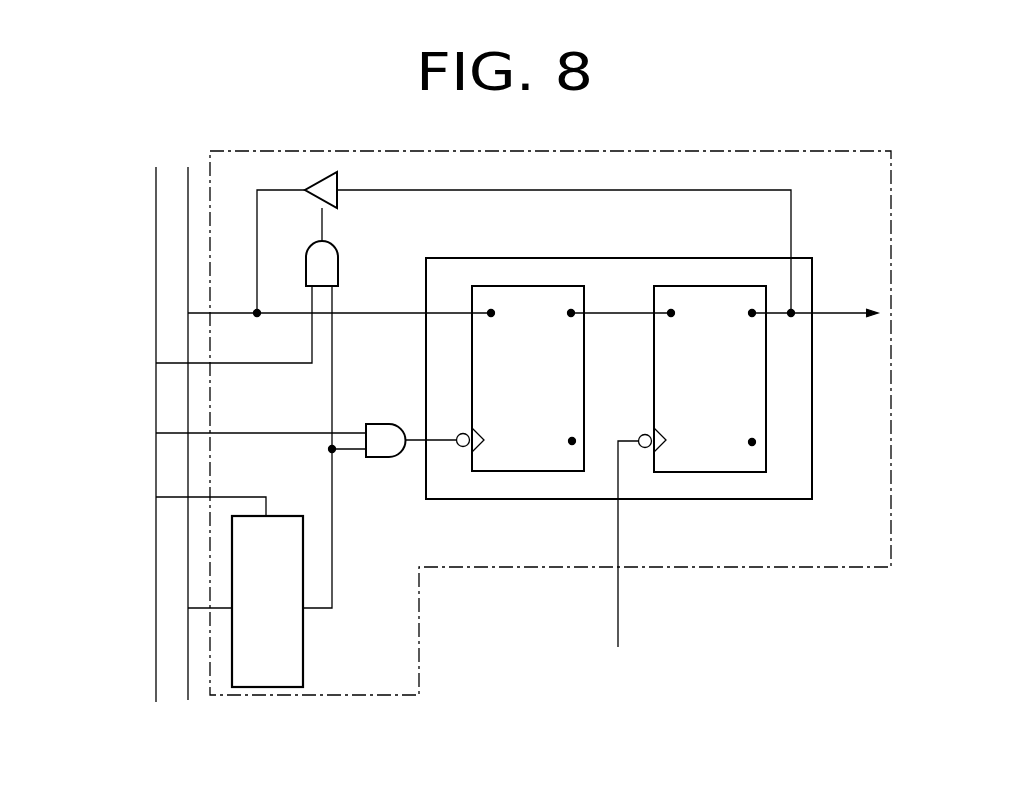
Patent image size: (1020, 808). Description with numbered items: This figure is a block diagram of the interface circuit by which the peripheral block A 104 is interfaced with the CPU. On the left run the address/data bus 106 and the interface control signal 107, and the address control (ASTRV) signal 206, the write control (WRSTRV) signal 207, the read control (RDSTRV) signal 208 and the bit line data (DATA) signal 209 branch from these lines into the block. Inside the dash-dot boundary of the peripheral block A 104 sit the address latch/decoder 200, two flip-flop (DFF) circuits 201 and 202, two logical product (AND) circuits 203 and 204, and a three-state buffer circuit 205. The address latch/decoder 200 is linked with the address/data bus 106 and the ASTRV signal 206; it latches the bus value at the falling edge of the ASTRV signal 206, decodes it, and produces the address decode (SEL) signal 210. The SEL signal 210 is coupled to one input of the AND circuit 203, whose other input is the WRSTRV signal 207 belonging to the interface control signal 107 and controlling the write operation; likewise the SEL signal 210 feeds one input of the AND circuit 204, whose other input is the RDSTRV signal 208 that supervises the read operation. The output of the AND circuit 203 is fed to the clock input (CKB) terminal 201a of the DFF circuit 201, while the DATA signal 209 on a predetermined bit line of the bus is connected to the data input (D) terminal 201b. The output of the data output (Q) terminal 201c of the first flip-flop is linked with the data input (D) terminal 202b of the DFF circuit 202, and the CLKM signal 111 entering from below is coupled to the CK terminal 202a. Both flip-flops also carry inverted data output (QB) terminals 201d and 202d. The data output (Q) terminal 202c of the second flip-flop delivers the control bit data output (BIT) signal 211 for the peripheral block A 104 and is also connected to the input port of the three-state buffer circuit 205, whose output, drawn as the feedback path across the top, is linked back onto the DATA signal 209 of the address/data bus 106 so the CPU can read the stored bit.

The peripheral block A 104 is at (710, 570).
The address/data bus 106 is at (188, 688).
The interface control signal 107 is at (156, 690).
The CLKM signal 111 is at (618, 627).
The address latch/decoder 200 is at (305, 662).
The flip-flop (DFF) circuit 201 is at (535, 286).
The clock input (CKB) terminal 201a is at (463, 447).
The data input (D) terminal 201b is at (491, 313).
The data output (Q) terminal 201c is at (571, 313).
The inverted data output (QB) terminal 201d is at (572, 441).
The flip-flop (DFF) circuit 202 is at (722, 286).
The CK terminal 202a is at (645, 447).
The data input (D) terminal 202b is at (671, 313).
The data output (Q) terminal 202c is at (752, 314).
The inverted data output (QB) terminal 202d is at (752, 442).
The logical product (AND) circuit 203 is at (378, 457).
The logical product (AND) circuit 204 is at (340, 268).
The three-state buffer circuit 205 is at (340, 184).
The address control (ASTRV) signal 206 is at (200, 497).
The write control (WRSTRV) signal 207 is at (240, 433).
The read control (RDSTRV) signal 208 is at (228, 363).
The bit line data (DATA) signal 209 is at (235, 313).
The address decode (SEL) signal 210 is at (335, 562).
The control bit data output (BIT) signal 211 is at (831, 313).